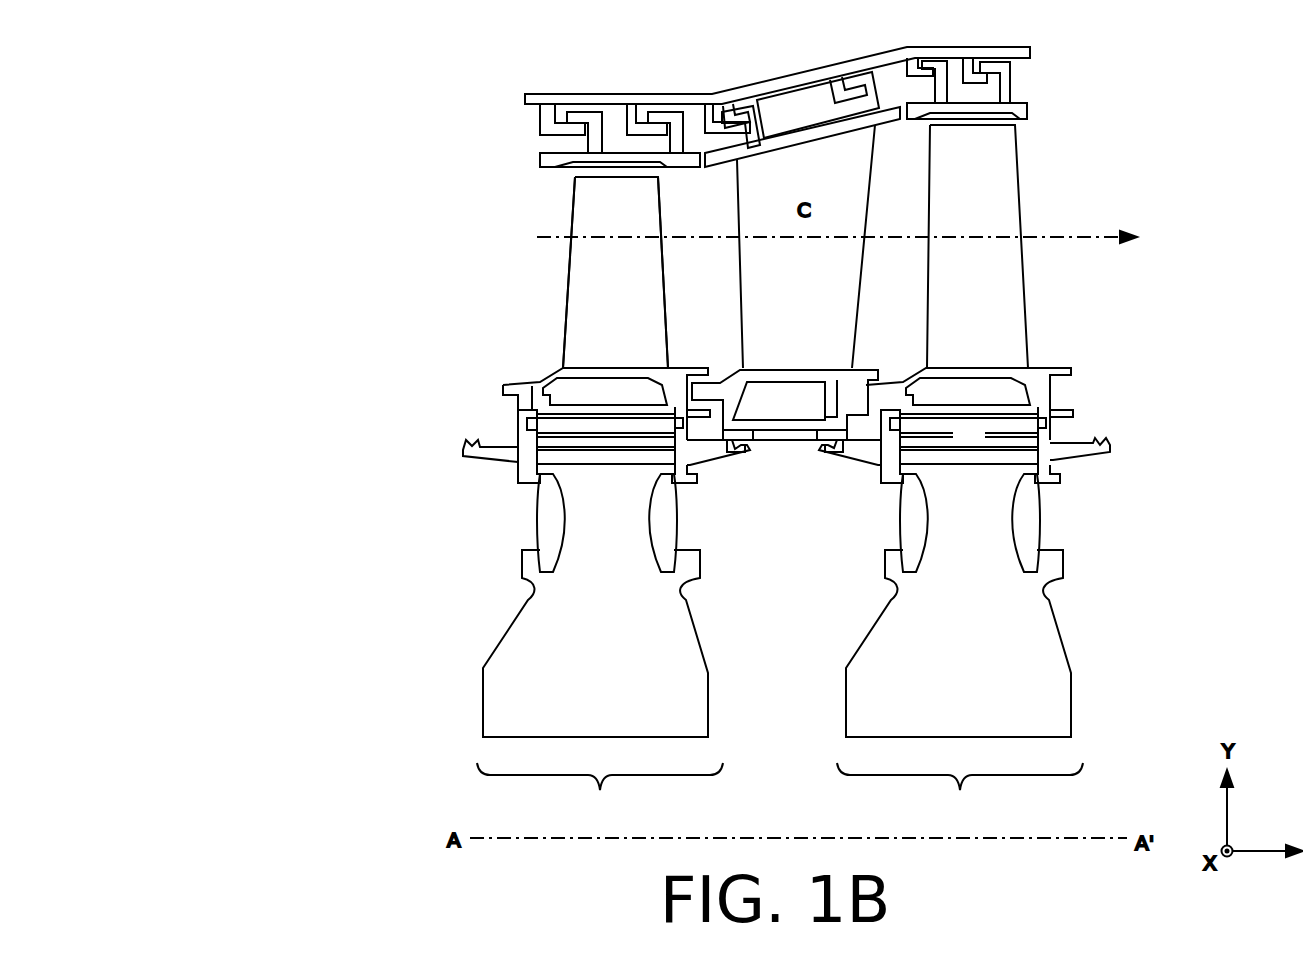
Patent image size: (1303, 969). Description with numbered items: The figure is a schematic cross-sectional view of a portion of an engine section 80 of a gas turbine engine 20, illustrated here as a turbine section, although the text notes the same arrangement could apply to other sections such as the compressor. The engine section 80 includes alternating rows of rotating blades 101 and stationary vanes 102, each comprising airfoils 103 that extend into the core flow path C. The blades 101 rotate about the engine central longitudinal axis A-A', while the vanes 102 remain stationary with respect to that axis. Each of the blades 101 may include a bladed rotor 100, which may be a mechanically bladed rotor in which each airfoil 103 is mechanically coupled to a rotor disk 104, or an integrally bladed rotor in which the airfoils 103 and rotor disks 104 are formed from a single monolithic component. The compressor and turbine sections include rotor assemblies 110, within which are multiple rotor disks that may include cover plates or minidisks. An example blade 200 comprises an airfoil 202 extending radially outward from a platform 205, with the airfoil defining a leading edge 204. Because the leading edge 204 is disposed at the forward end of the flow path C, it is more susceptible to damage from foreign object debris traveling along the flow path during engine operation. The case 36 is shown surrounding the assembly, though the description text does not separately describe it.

The gas turbine engine 20 is at (205, 101).
The engine section 80 is at (349, 87).
The engine case 36 is at (578, 100).
The bladed rotor 100 is at (550, 175).
The blades 101 is at (544, 190).
The vanes 102 is at (852, 148).
The airfoil 103 is at (625, 312).
The rotor disk 104 is at (622, 659).
The rotor assemblies 110 is at (780, 793).
The blade 200 is at (499, 265).
The airfoil 202 is at (587, 348).
The leading edge 204 is at (567, 308).
The platform 205 is at (518, 392).